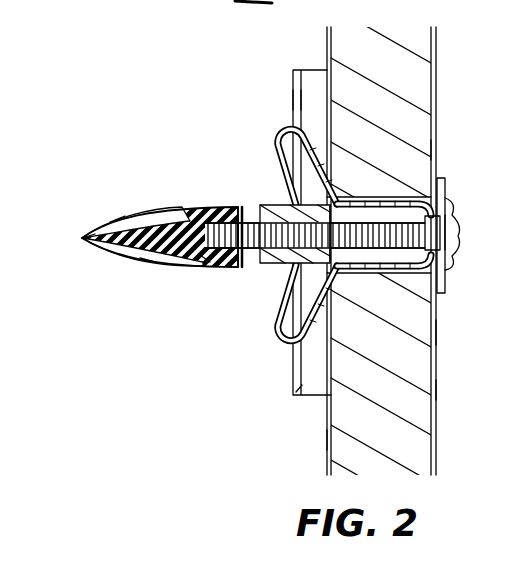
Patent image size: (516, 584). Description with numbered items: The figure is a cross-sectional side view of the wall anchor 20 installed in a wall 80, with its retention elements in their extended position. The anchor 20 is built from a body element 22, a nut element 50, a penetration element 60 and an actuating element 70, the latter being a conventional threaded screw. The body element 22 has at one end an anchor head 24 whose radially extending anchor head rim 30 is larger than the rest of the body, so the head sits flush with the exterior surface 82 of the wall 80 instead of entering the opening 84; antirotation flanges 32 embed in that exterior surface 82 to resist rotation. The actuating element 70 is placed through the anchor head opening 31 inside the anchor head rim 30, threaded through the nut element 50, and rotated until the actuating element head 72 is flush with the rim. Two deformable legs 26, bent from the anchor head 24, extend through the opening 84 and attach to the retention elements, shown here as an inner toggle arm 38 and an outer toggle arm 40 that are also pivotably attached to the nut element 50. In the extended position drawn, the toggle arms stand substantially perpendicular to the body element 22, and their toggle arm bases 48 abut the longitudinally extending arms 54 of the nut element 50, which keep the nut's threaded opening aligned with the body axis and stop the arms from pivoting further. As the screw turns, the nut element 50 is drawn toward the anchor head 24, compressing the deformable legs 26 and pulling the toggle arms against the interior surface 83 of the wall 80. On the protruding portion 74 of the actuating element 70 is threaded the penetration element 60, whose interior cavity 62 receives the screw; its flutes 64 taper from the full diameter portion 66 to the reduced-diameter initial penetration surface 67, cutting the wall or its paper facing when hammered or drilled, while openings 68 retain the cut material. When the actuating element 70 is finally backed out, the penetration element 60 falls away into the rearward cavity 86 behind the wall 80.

The wall anchor 20 is at (245, 322).
The body element 22 is at (432, 325).
The anchor head 24 is at (450, 278).
The deformable legs 26 is at (278, 142).
The anchor head rim 30 is at (428, 200).
The anchor head opening 31 is at (456, 222).
The antirotation flanges 32 is at (506, 210).
The inner toggle arm 38 is at (305, 397).
The outer toggle arm 40 is at (308, 98).
The toggle arm bases 48 is at (293, 205).
The nut element 50 is at (276, 271).
The longitudinally extending arms 54 is at (265, 207).
The penetration element 60 is at (179, 235).
The interior cavity 62 is at (190, 227).
The flutes 64 is at (137, 244).
The full diameter portion 66 is at (234, 268).
The initial penetration surface 67 is at (82, 235).
The openings 68 is at (118, 222).
The actuating element 70 is at (402, 273).
The actuating element head 72 is at (456, 221).
The protruding portion 74 is at (207, 263).
The wall 80 is at (466, 443).
The exterior surface 82 is at (442, 390).
The interior surface 83 is at (330, 435).
The opening 84 is at (433, 153).
The rearward cavity 86 is at (219, 421).